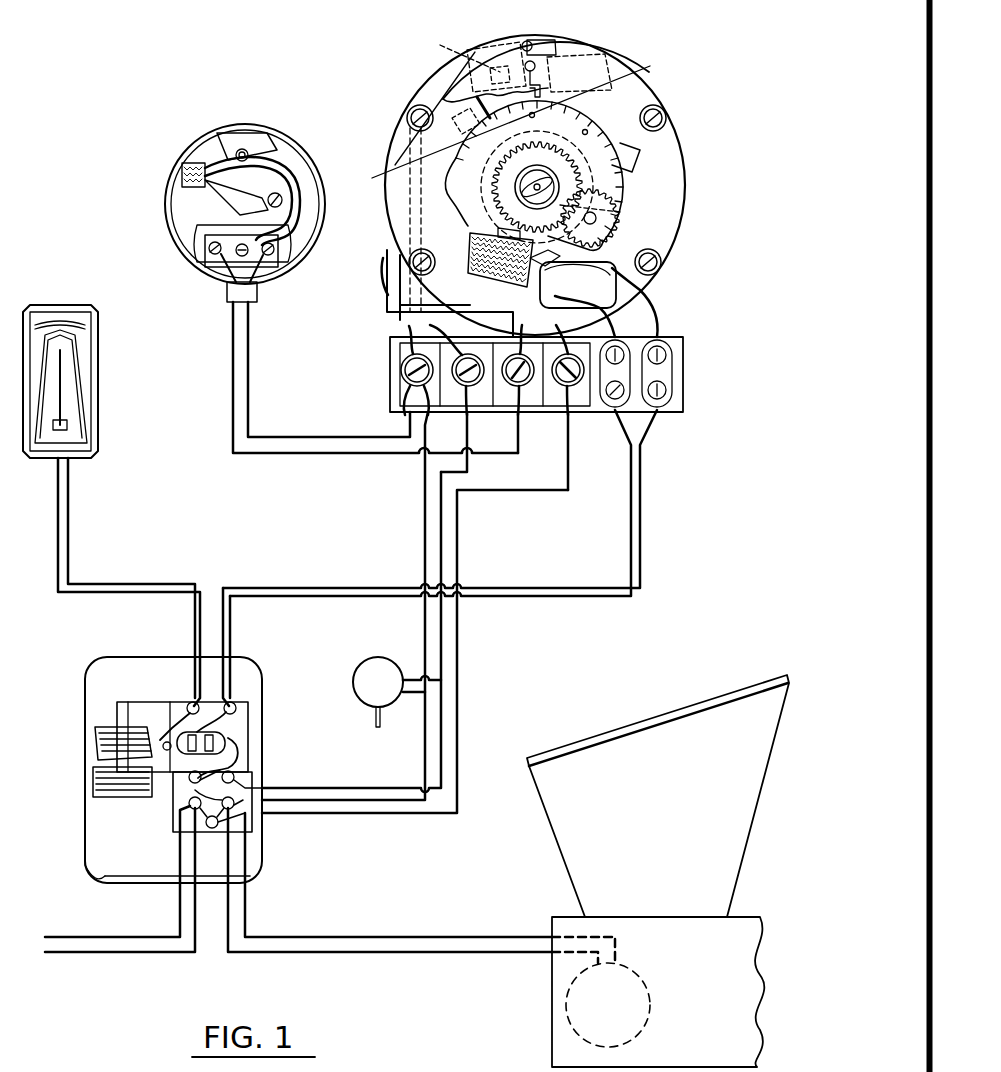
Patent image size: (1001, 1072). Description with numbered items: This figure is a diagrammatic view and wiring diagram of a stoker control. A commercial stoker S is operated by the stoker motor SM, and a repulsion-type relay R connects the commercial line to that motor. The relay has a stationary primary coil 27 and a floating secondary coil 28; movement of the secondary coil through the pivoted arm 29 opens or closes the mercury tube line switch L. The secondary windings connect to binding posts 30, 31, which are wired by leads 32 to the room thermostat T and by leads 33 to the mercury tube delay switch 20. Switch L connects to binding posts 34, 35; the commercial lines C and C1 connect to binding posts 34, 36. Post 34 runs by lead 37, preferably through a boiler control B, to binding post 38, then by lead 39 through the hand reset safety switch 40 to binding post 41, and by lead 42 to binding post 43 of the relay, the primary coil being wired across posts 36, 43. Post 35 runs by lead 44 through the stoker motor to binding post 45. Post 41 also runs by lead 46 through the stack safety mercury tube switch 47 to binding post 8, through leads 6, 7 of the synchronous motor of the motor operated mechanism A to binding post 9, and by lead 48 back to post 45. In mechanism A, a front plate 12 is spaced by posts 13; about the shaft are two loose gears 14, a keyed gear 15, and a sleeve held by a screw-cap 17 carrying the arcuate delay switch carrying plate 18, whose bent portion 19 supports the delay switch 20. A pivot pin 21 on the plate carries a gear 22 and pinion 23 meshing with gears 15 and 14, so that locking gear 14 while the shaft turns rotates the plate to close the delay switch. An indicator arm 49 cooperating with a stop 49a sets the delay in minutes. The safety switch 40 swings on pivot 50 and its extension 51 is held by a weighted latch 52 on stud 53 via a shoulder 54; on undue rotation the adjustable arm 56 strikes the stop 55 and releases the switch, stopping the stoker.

The lead 6 is at (386, 276).
The lead 7 is at (399, 294).
The binding post 8 is at (515, 418).
The binding post 9 is at (566, 418).
The front plate 12 is at (662, 186).
The posts 13 is at (406, 118).
The gears 14 is at (493, 195).
The gear 15 is at (500, 211).
The screw-cap 17 is at (528, 185).
The delay switch carrying plate 18 is at (562, 122).
The bent portion 19 is at (496, 236).
The mercury tube delay switch 20 is at (604, 289).
The pivot pin 21 is at (622, 228).
The gear 22 is at (598, 219).
The pinion 23 is at (625, 212).
The primary coil 27 is at (92, 789).
The secondary coil 28 is at (94, 744).
The pivoted arm 29 is at (188, 775).
The binding post 30 is at (188, 700).
The binding post 31 is at (236, 700).
The leads 32 is at (147, 586).
The leads 33 is at (352, 590).
The binding post 34 is at (205, 776).
The binding post 35 is at (236, 776).
The binding post 36 is at (190, 808).
The lead 37 is at (443, 570).
The binding post 38 is at (460, 420).
The lead 39 is at (412, 219).
The hand reset safety switch 40 is at (606, 72).
The binding post 41 is at (402, 371).
The lead 42 is at (423, 568).
The binding post 43 is at (250, 832).
The lead 44 is at (412, 938).
The binding post 45 is at (212, 830).
The lead 46 is at (249, 378).
The mercury tube switch 47 is at (232, 193).
The lead 48 is at (510, 492).
The indicator arm 49 is at (480, 110).
The stop 49a is at (458, 125).
The pivot 50 is at (452, 55).
The extension 51 is at (556, 56).
The weighted pivoted latch 52 is at (456, 93).
The stud 53 is at (533, 43).
The shoulder 54 is at (540, 80).
The stop 55 is at (519, 110).
The adjustable arm 56 is at (642, 163).
The motor operated mechanism A is at (660, 142).
The boiler control B is at (372, 662).
The commercial line C is at (100, 937).
The commercial line C1 is at (100, 952).
The mercury tube switch L is at (234, 730).
The relay R is at (122, 664).
The stoker S is at (658, 871).
The stoker motor SM is at (566, 1003).
The room thermostat T is at (92, 310).